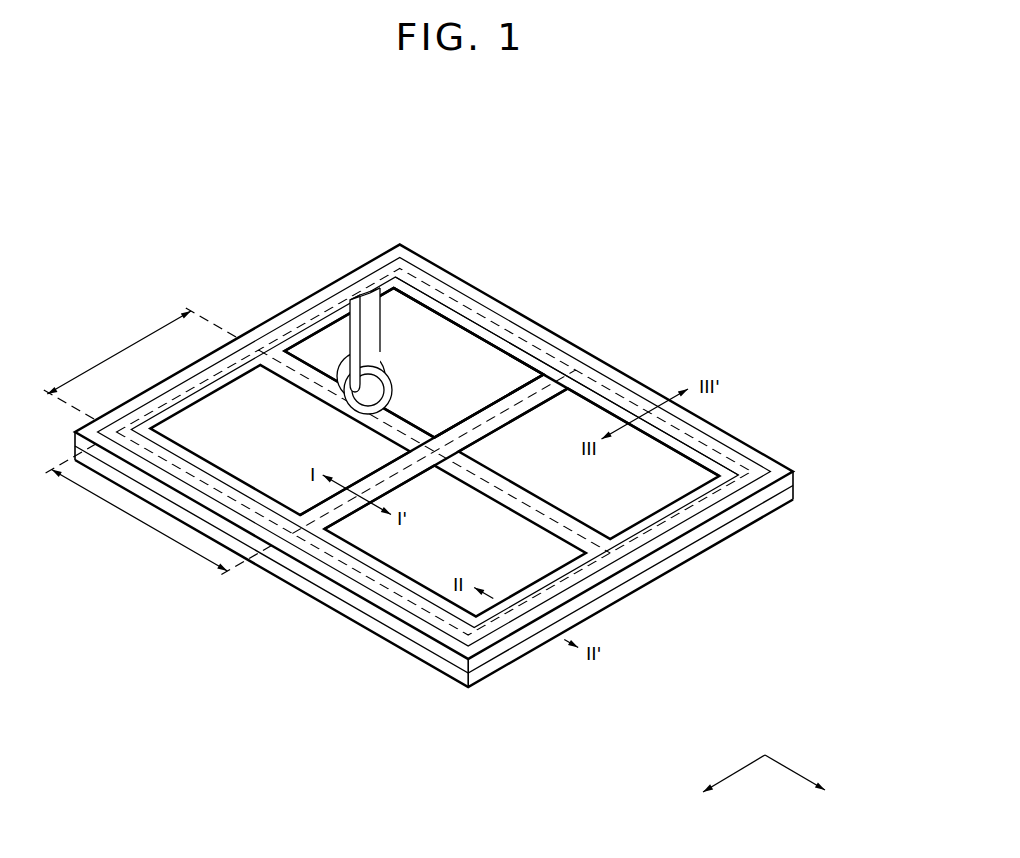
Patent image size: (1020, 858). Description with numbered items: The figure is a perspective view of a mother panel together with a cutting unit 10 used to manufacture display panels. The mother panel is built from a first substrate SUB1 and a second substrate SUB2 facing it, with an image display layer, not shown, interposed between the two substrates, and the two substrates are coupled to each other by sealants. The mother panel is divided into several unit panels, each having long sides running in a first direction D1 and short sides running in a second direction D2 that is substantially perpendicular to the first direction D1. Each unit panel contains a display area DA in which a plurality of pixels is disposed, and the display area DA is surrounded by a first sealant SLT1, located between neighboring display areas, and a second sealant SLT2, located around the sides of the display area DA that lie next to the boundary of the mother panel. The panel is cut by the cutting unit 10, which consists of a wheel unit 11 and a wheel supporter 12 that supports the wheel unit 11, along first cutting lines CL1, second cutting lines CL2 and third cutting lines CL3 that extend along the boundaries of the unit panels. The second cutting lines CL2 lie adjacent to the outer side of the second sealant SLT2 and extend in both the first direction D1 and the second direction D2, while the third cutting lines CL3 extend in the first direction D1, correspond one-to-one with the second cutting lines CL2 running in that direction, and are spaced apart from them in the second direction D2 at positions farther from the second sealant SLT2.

The first substrate SUB1 is at (748, 520).
The second substrate SUB2 is at (708, 537).
The display area DA is at (402, 313).
The first cutting line CL1 is at (500, 410).
The second cutting line CL2 is at (317, 308).
The third cutting line CL3 is at (640, 388).
The first sealant SLT1 is at (547, 393).
The second sealant SLT2 is at (470, 328).
The cutting unit 10 is at (407, 351).
The wheel unit 11 is at (381, 373).
The wheel supporter 12 is at (379, 341).
The first direction D1 is at (807, 783).
The second direction D2 is at (719, 783).